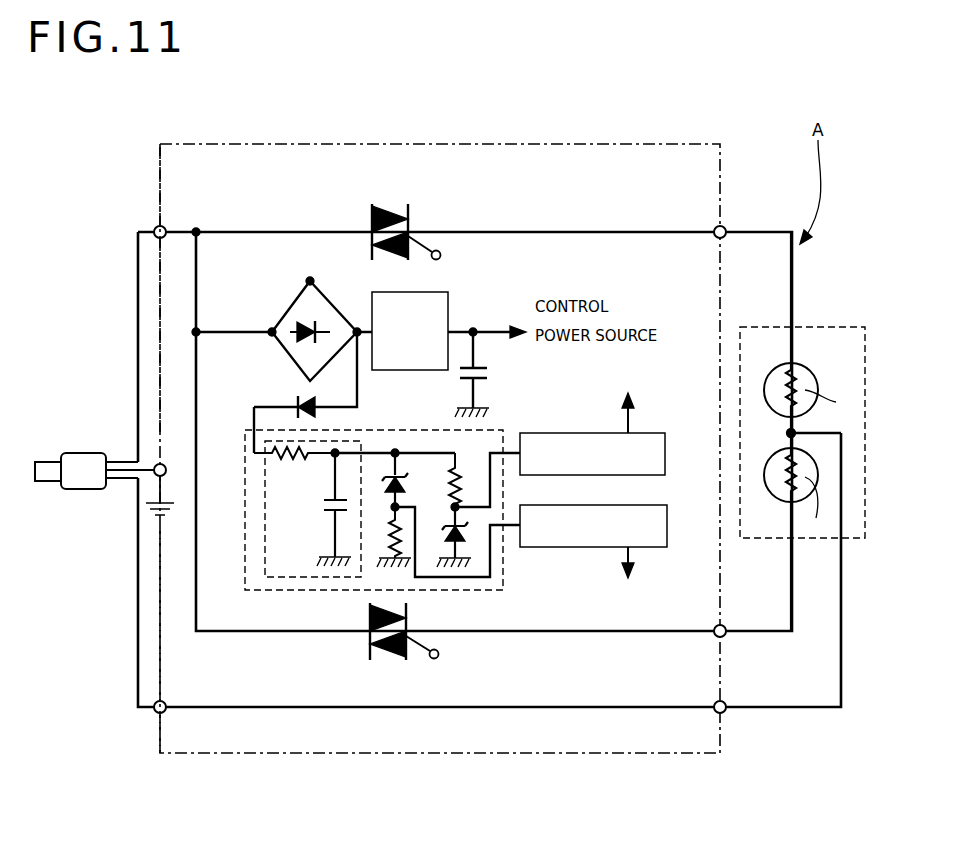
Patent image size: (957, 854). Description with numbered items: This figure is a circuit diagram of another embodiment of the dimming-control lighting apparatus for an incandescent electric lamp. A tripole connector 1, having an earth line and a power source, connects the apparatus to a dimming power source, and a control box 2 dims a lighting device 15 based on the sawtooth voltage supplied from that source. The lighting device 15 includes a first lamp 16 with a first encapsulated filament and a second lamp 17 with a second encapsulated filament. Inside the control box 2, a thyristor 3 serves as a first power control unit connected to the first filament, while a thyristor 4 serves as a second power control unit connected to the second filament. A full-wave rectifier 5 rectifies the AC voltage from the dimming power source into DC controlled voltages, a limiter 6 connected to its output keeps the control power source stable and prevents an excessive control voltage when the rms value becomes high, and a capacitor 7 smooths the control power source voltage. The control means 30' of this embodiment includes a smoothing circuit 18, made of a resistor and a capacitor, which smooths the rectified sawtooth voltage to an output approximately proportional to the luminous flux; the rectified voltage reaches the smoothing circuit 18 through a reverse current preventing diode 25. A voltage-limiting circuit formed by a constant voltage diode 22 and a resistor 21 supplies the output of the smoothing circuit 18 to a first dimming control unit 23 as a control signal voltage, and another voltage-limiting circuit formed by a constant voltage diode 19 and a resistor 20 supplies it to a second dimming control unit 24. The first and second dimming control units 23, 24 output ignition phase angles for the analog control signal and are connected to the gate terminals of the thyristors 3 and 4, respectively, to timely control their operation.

The tripole connector 1 is at (82, 463).
The control box 2 is at (268, 757).
The thyristor 3 is at (372, 212).
The thyristor 4 is at (370, 638).
The full-wave rectifier 5 is at (293, 311).
The limiter 6 is at (446, 300).
The capacitor 7 is at (490, 376).
The lighting device 15 is at (843, 323).
The first lamp 16 is at (815, 378).
The second lamp 17 is at (818, 469).
The smoothing circuit 18 is at (265, 520).
The constant voltage diode 19 is at (405, 485).
The resistor 20 is at (389, 540).
The resistor 21 is at (462, 485).
The constant voltage diode 22 is at (468, 540).
The first dimming control unit 23 is at (578, 433).
The second dimming control unit 24 is at (545, 547).
The reverse current preventing diode 25 is at (300, 402).
The control means 30' is at (374, 553).